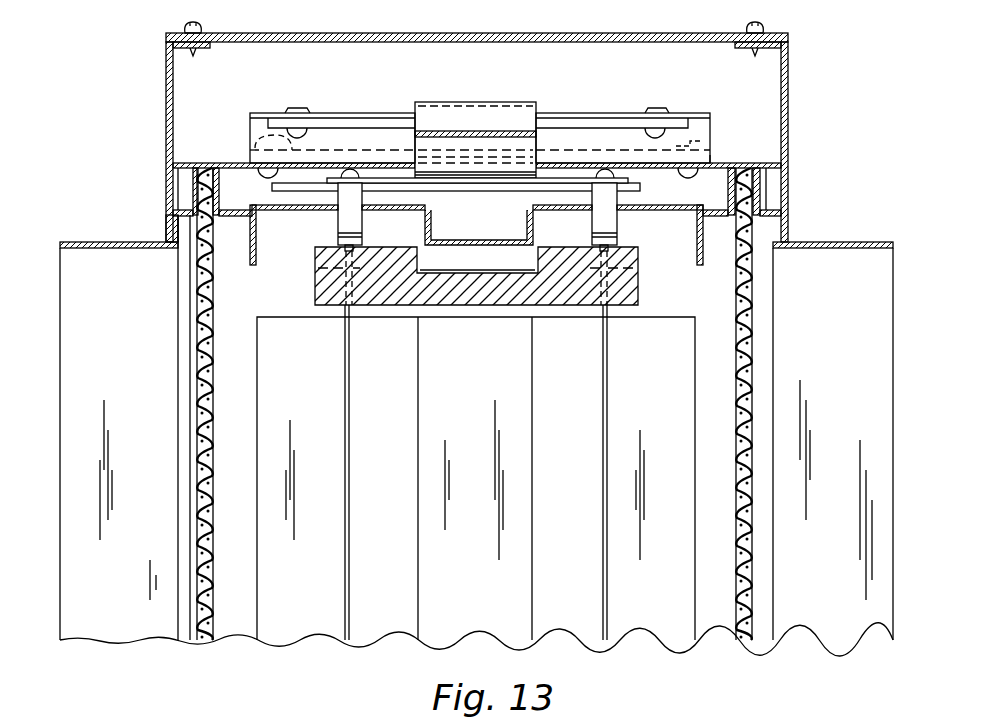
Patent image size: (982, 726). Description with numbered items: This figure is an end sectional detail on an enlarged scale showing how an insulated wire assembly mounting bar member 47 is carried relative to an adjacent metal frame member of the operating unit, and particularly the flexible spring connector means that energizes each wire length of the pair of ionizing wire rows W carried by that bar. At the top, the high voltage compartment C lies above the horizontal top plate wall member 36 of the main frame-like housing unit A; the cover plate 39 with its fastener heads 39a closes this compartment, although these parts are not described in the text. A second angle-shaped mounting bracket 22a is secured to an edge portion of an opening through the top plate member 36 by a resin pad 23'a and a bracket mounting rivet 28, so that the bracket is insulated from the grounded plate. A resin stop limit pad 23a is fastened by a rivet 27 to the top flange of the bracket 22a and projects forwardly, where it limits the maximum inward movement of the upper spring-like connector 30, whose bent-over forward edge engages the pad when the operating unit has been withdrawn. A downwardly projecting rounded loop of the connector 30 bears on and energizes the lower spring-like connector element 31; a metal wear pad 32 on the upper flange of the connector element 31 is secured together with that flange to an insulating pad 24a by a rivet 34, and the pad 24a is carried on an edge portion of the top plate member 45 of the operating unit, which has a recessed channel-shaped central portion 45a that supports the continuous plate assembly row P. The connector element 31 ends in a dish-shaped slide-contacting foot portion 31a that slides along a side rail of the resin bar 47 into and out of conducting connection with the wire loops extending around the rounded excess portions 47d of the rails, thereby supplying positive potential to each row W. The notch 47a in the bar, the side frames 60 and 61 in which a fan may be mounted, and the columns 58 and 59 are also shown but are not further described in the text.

The cover top plate 39 is at (640, 33).
The screws 39a is at (763, 31).
The high voltage compartment C is at (781, 85).
The rivet 27 is at (300, 108).
The first spring-like connector 30 is at (504, 102).
The stop limit pad 23a is at (561, 128).
The resin pad 23'a is at (301, 138).
The second mounting bracket 22a is at (614, 115).
The bracket mounting rivet 28 is at (708, 132).
The top plate wall member 36 is at (722, 163).
The metal wear pad 32 is at (630, 188).
The rivet 34 is at (330, 180).
The insulating pad 24a is at (292, 191).
The second spring-like connector element 31 is at (338, 228).
The slide-contacting foot portion 31a is at (343, 247).
The top plate member 45 is at (699, 250).
The recessed central portion 45a is at (492, 241).
The wire assembly mounting bar member 47 is at (640, 294).
The block notch 47a is at (496, 270).
The rounded excess portions 47d is at (322, 257).
The housing unit A is at (788, 186).
The left column 58 is at (196, 318).
The right column 59 is at (753, 320).
The side frame 60 is at (60, 292).
The side frame 61 is at (893, 360).
The ionizing wire row W is at (476, 472).
The plate member assembly row P is at (257, 498).